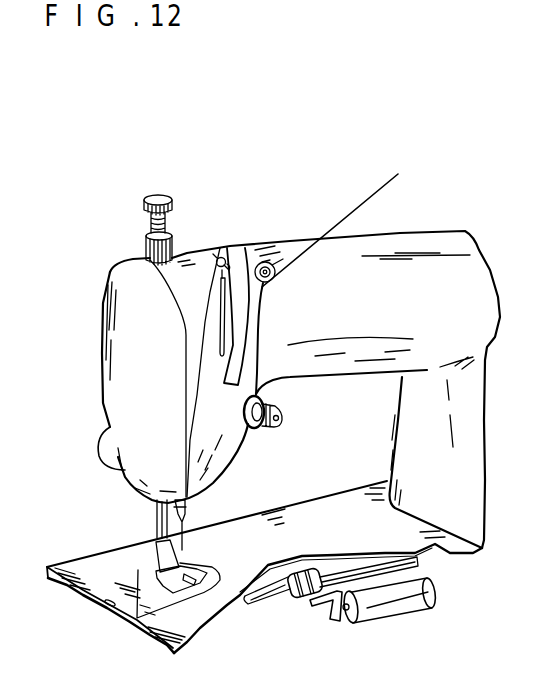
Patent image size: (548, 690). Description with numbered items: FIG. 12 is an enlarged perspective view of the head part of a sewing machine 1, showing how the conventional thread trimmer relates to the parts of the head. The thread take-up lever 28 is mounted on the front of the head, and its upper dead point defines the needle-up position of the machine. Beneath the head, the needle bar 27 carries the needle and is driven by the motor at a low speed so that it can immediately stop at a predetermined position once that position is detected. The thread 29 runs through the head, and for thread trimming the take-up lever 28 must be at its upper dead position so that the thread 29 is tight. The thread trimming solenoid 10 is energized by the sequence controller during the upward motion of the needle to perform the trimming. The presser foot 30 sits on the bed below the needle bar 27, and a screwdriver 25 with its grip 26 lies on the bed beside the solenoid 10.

The sewing machine 1 is at (273, 237).
The thread trimming solenoid 10 is at (382, 617).
The screwdriver 25 is at (255, 607).
The screwdriver grip 26 is at (300, 608).
The needle bar 27 is at (184, 510).
The thread take-up lever 28 is at (219, 252).
The thread 29 is at (212, 347).
The presser foot 30 is at (150, 572).